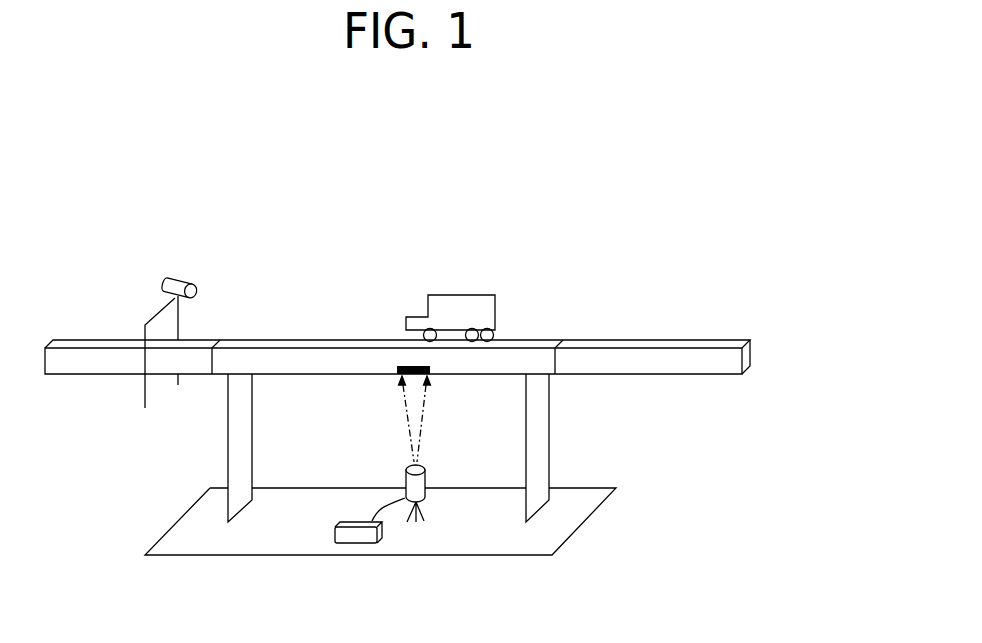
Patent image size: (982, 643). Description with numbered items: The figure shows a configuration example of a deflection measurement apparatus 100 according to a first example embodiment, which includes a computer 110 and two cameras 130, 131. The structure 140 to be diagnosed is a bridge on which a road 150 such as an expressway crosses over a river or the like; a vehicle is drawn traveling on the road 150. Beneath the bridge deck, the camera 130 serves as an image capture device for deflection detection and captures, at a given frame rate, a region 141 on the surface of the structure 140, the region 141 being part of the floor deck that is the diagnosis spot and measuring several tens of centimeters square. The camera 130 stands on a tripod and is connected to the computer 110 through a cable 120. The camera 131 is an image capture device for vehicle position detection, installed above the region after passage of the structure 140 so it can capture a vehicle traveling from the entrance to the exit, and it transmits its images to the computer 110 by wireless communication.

The deflection measurement apparatus 100 is at (407, 590).
The computer 110 is at (333, 537).
The cable 120 is at (382, 506).
The camera 130 is at (427, 478).
The camera 131 is at (180, 274).
The structure 140 is at (315, 339).
The region 141 is at (398, 370).
The road 150 is at (621, 326).